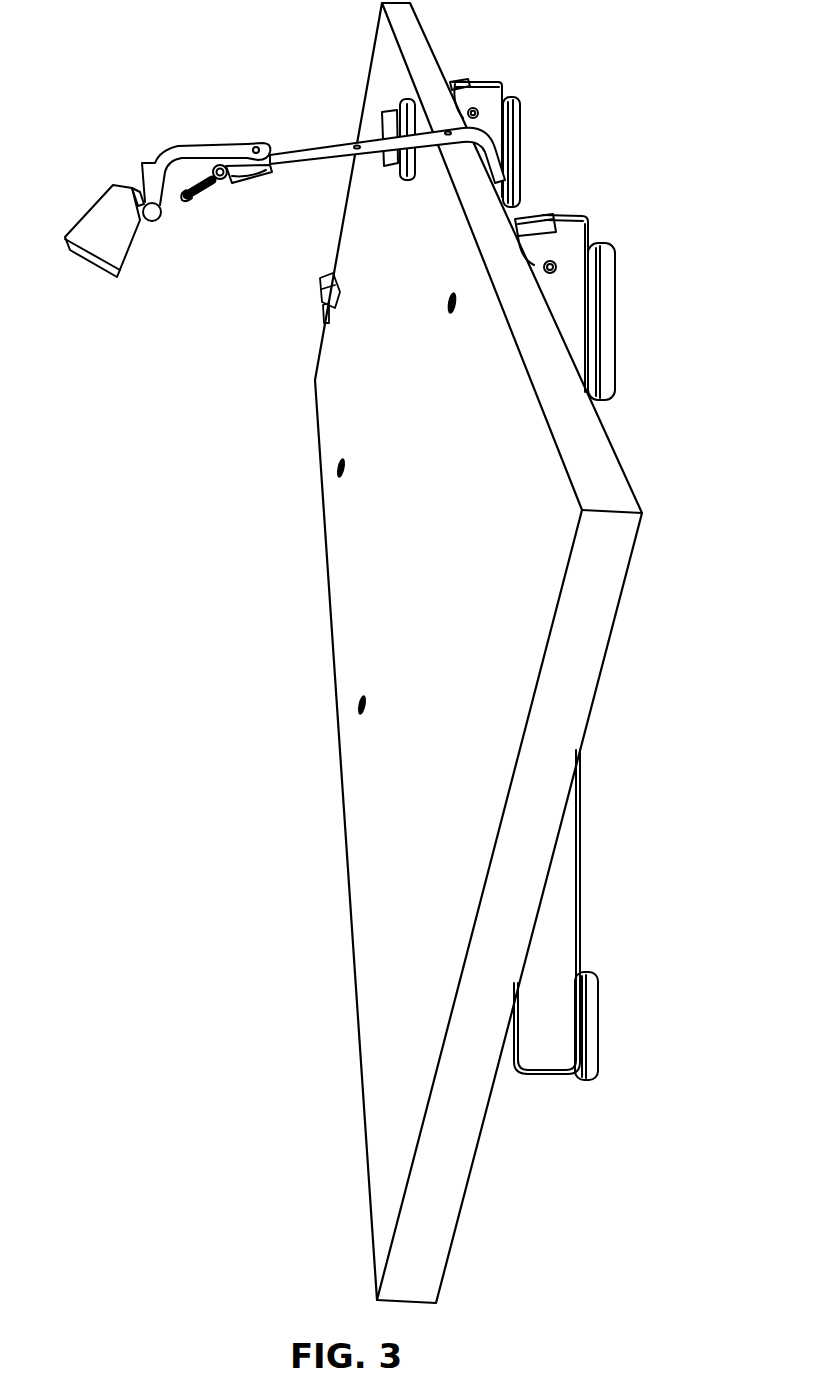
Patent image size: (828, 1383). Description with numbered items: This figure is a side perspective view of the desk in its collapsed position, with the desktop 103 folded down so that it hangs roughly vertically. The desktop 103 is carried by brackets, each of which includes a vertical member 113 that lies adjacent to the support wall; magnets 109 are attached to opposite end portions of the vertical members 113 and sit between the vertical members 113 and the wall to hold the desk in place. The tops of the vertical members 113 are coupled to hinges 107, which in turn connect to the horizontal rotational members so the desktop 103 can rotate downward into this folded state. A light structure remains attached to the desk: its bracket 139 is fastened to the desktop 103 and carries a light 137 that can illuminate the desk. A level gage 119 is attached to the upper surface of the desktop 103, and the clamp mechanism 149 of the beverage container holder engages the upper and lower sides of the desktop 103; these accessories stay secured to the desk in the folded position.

The desktop 103 is at (345, 548).
The hinge 107 is at (480, 100).
The magnet 109 is at (517, 140).
The vertical member 113 is at (560, 903).
The level gage 119 is at (387, 110).
The light 137 is at (105, 250).
The bracket 139 is at (317, 150).
The clamp mechanism 149 is at (320, 288).